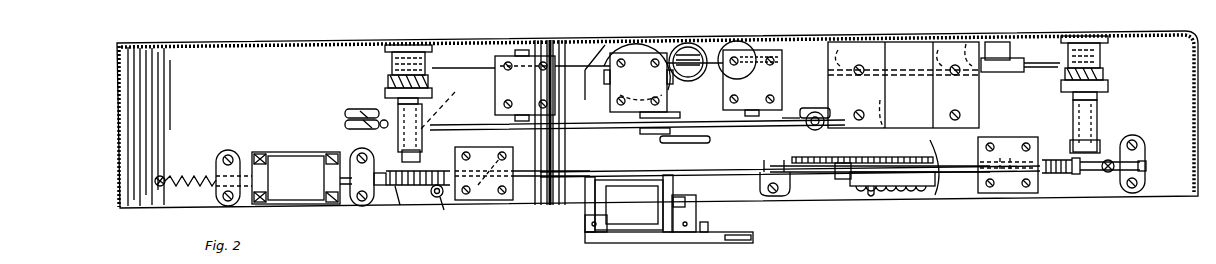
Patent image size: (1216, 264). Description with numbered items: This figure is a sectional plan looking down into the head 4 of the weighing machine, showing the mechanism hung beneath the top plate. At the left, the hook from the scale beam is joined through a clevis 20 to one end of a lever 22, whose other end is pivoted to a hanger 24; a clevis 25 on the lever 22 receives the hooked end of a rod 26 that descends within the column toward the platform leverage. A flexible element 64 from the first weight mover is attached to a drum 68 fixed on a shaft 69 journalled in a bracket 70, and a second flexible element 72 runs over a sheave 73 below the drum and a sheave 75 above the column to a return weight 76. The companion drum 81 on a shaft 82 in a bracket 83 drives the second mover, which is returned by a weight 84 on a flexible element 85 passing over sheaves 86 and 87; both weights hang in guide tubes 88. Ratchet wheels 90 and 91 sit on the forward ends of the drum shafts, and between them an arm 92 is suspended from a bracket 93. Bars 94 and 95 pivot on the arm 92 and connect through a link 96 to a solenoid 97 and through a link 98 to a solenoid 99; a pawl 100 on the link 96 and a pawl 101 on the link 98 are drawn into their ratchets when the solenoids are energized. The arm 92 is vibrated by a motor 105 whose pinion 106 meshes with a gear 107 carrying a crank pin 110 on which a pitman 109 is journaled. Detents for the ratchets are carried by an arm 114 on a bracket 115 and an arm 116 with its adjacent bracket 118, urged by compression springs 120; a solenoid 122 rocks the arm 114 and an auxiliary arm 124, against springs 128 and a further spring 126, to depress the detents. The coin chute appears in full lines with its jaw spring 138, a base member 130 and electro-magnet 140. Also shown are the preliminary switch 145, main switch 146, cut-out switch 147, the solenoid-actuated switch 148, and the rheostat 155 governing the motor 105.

The head 4 is at (486, 38).
The clevis 20 is at (345, 114).
The lever 22 is at (466, 109).
The hanger 24 is at (810, 112).
The clevis 25 is at (670, 143).
The rod 26 is at (642, 132).
The flexible element 64 is at (434, 68).
The drum 68 is at (410, 44).
The shaft 69 is at (446, 107).
The bracket 70 is at (422, 148).
The flexible element 72 is at (582, 70).
The sheave 73 is at (392, 70).
The sheave 75 is at (690, 45).
The weight 76 is at (735, 42).
The drum 81 is at (1100, 58).
The shaft 82 is at (1090, 36).
The bracket 83 is at (1098, 125).
The weight 84 is at (765, 46).
The flexible element 85 is at (804, 49).
The sheave 86 is at (795, 48).
The sheave 87 is at (1010, 62).
The tubes 88 is at (700, 74).
The ratchet wheel 90 is at (444, 200).
The ratchet wheel 91 is at (1072, 176).
The arm 92 is at (758, 182).
The bracket 93 is at (785, 190).
The bar 94 is at (723, 168).
The bar 95 is at (1008, 145).
The link 96 is at (506, 133).
The solenoid 97 is at (470, 150).
The link 98 is at (1025, 150).
The solenoid 99 is at (1038, 142).
The pawl 100 is at (500, 200).
The pawl 101 is at (990, 194).
The motor 105 is at (903, 85).
The pinion 106 is at (910, 145).
The gear 107 is at (878, 125).
The pitman 109 is at (848, 180).
The crank pin 110 is at (878, 186).
The arm 114 is at (410, 188).
The bracket 115 is at (352, 156).
The arm 116 is at (1148, 164).
The bracket 118 is at (1146, 182).
The compression springs 120 is at (392, 196).
The solenoid 122 is at (302, 178).
The auxiliary arm 124 is at (230, 165).
The spring 126 is at (178, 172).
The springs 128 is at (420, 190).
The base plate 130 is at (755, 238).
The spring 138 is at (712, 226).
The electro-magnet 140 is at (669, 209).
The preliminary switch 145 is at (525, 85).
The main switch 146 is at (639, 85).
The cut-out switch 147 is at (752, 83).
The solenoid-actuated switch 148 is at (636, 52).
The rheostat 155 is at (940, 196).